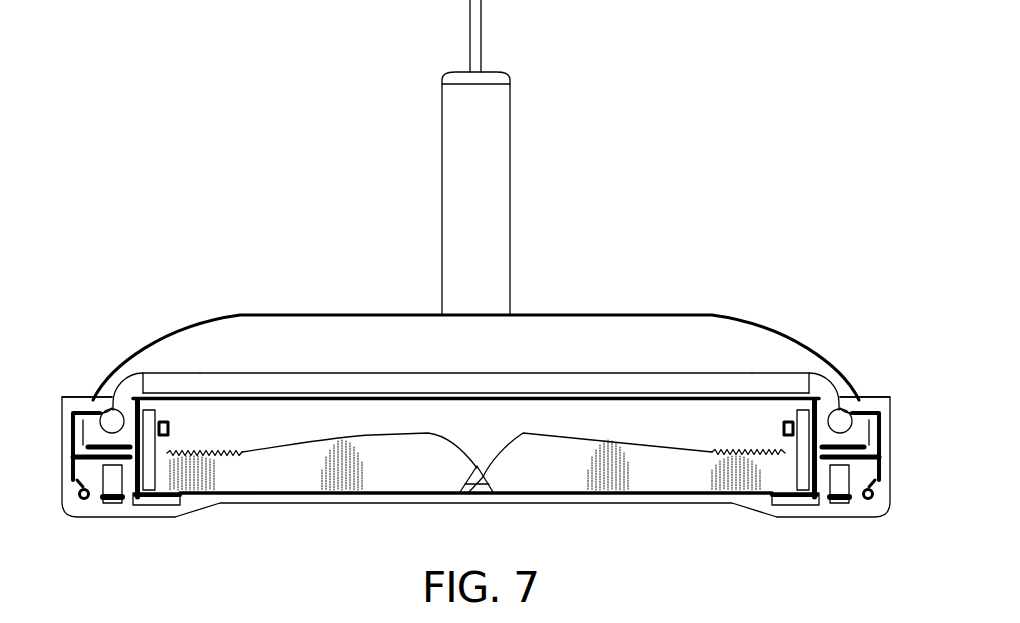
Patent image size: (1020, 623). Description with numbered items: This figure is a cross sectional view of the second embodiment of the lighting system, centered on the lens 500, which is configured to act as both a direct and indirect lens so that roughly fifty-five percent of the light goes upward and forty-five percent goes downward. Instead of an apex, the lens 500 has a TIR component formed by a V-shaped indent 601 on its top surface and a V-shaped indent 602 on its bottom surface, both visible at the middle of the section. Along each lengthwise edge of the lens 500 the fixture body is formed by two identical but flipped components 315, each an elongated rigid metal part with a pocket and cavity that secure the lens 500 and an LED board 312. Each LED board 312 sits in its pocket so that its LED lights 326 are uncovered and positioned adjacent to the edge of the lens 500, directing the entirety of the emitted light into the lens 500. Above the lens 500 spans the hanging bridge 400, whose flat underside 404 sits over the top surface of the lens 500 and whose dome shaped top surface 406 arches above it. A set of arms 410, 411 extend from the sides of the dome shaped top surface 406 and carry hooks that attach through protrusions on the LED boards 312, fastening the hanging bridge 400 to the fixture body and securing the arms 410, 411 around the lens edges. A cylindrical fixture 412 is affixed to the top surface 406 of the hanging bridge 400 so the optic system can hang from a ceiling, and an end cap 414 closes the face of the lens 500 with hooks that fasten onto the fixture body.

The hanging bridge 400 is at (561, 150).
The cylindrical fixture 412 is at (460, 136).
The dome shaped top surface 406 is at (653, 342).
The arm 410 is at (105, 386).
The arm 411 is at (840, 378).
The end cap 414 is at (362, 398).
The flat underside 404 is at (265, 398).
The V-shaped indent 601 is at (505, 440).
The lens 500 is at (607, 473).
The V-shaped indent 602 is at (478, 493).
The component 315 is at (62, 452).
The LED board 312 is at (142, 495).
The LED light 326 is at (167, 420).